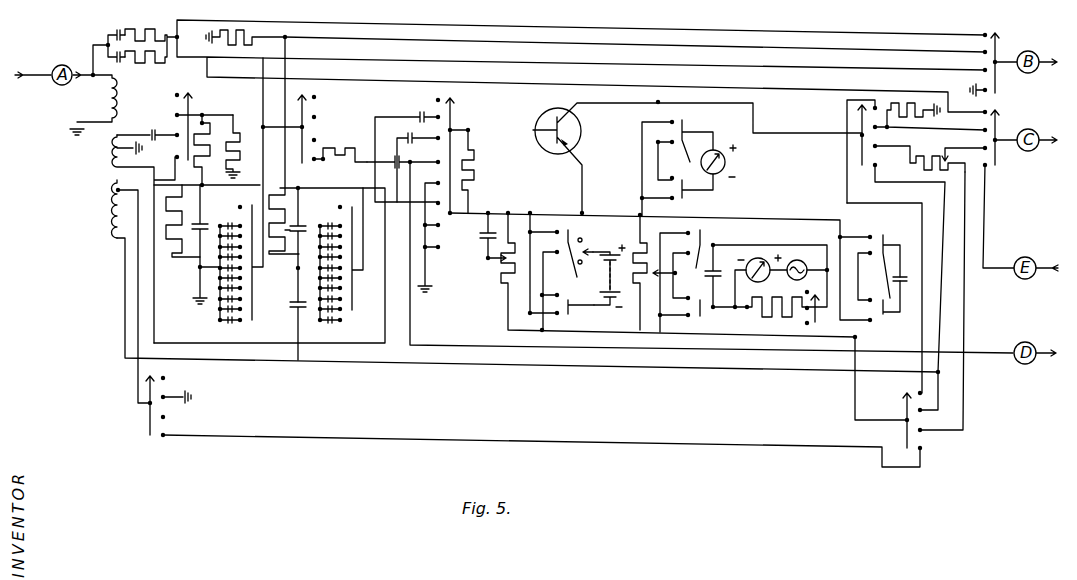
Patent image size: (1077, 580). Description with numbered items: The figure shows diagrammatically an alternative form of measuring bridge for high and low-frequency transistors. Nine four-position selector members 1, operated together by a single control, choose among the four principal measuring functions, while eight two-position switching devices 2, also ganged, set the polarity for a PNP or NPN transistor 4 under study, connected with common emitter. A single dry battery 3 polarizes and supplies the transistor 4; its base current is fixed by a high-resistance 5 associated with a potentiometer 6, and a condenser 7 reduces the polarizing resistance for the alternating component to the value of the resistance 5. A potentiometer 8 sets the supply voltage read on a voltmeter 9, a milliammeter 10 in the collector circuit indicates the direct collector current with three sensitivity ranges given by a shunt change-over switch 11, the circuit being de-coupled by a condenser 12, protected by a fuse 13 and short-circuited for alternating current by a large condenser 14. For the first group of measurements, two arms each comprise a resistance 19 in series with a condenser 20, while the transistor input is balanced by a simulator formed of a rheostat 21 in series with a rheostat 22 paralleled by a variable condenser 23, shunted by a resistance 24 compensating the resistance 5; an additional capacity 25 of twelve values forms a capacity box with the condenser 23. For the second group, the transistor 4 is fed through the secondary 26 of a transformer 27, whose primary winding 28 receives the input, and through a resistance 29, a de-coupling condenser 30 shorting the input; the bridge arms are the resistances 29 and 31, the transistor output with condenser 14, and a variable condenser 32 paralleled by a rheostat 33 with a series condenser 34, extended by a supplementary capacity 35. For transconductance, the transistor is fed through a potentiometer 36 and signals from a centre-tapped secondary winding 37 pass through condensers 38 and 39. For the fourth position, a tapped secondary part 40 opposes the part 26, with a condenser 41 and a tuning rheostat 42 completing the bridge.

The selector member 1 is at (189, 94).
The switching device 2 is at (715, 226).
The dry battery 3 is at (614, 300).
The transistor 4 is at (547, 121).
The high-resistance 5 is at (474, 161).
The potentiometer 6 is at (503, 281).
The condenser 7 is at (485, 241).
The potentiometer 8 is at (654, 272).
The voltmeter 9 is at (722, 152).
The milliammeter 10 is at (762, 266).
The shunt change-over switch 11 is at (785, 302).
The condenser 12 is at (714, 270).
The fuse 13 is at (802, 262).
The condenser 14 is at (903, 283).
The resistance 19 is at (152, 29).
The condenser 20 is at (117, 31).
The rheostat 21 is at (206, 125).
The rheostat 22 is at (172, 233).
The variable condenser 23 is at (209, 219).
The resistance 24 is at (236, 142).
The additional capacity 25 is at (252, 298).
The secondary 26 is at (107, 217).
The transformer 27 is at (77, 128).
The primary winding 28 is at (112, 103).
The resistance 29 is at (916, 103).
The de-coupling condenser 30 is at (425, 118).
The resistance 31 is at (243, 30).
The variable condenser 32 is at (318, 212).
The rheostat 33 is at (283, 256).
The condenser 34 is at (293, 307).
The supplementary capacity 35 is at (352, 305).
The potentiometer 36 is at (950, 173).
The secondary winding 37 is at (110, 156).
The condenser 38 is at (152, 130).
The condenser 39 is at (411, 132).
The secondary part 40 is at (117, 190).
The condenser 41 is at (393, 156).
The tuning rheostat 42 is at (350, 148).